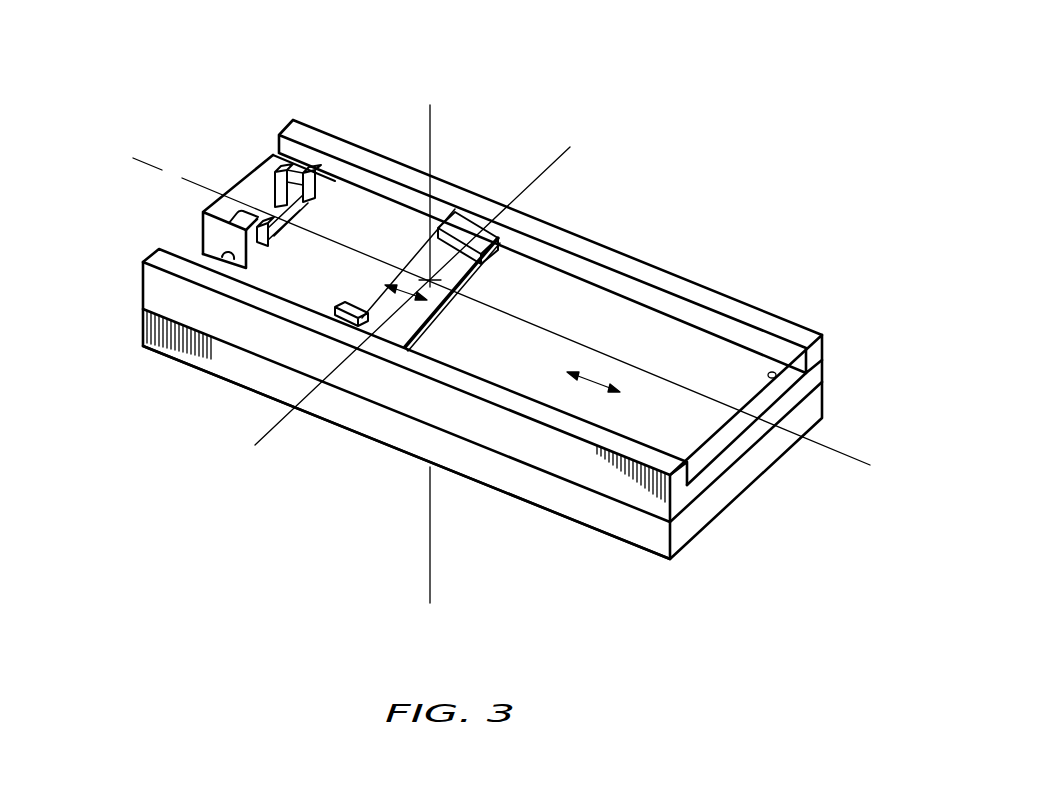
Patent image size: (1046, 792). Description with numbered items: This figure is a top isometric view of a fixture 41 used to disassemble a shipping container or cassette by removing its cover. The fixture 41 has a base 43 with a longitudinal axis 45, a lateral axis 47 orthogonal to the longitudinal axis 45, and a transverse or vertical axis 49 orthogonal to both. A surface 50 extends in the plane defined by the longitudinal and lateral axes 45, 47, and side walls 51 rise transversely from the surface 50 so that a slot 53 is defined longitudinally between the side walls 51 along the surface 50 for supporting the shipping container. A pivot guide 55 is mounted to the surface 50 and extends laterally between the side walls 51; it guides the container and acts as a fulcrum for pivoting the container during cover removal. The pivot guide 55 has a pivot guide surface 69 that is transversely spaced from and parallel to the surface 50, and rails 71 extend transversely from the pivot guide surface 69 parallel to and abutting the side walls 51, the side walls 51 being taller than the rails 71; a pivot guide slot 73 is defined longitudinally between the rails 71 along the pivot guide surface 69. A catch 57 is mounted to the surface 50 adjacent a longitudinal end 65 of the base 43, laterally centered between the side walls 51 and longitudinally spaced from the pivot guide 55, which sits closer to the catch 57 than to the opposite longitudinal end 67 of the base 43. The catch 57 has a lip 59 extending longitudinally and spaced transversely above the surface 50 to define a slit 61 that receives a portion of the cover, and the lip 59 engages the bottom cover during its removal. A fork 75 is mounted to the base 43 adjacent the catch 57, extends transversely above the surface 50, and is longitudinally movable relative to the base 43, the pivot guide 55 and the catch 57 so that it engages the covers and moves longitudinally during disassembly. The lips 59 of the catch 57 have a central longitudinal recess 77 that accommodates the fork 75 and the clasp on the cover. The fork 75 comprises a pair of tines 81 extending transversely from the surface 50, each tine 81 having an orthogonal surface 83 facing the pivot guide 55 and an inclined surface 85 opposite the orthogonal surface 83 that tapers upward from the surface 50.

The fixture 41 is at (770, 128).
The base 43 is at (814, 405).
The longitudinal axis 45 is at (843, 452).
The lateral axis 47 is at (570, 147).
The transverse axis 49 is at (432, 127).
The surface 50 is at (726, 362).
The side walls 51 is at (642, 270).
The slot 53 is at (593, 392).
The pivot guide 55 is at (495, 288).
The catch 57 is at (257, 172).
The lip 59 is at (248, 262).
The slit 61 is at (228, 268).
The longitudinal end 65 is at (137, 240).
The opposite longitudinal end 67 is at (725, 502).
The pivot guide surface 69 is at (440, 250).
The rails 71 is at (470, 226).
The pivot guide slot 73 is at (400, 301).
The fork 75 is at (328, 200).
The central longitudinal recess 77 is at (268, 192).
The tines 81 is at (298, 227).
The orthogonal surface 83 is at (305, 205).
The inclined surface 85 is at (236, 214).